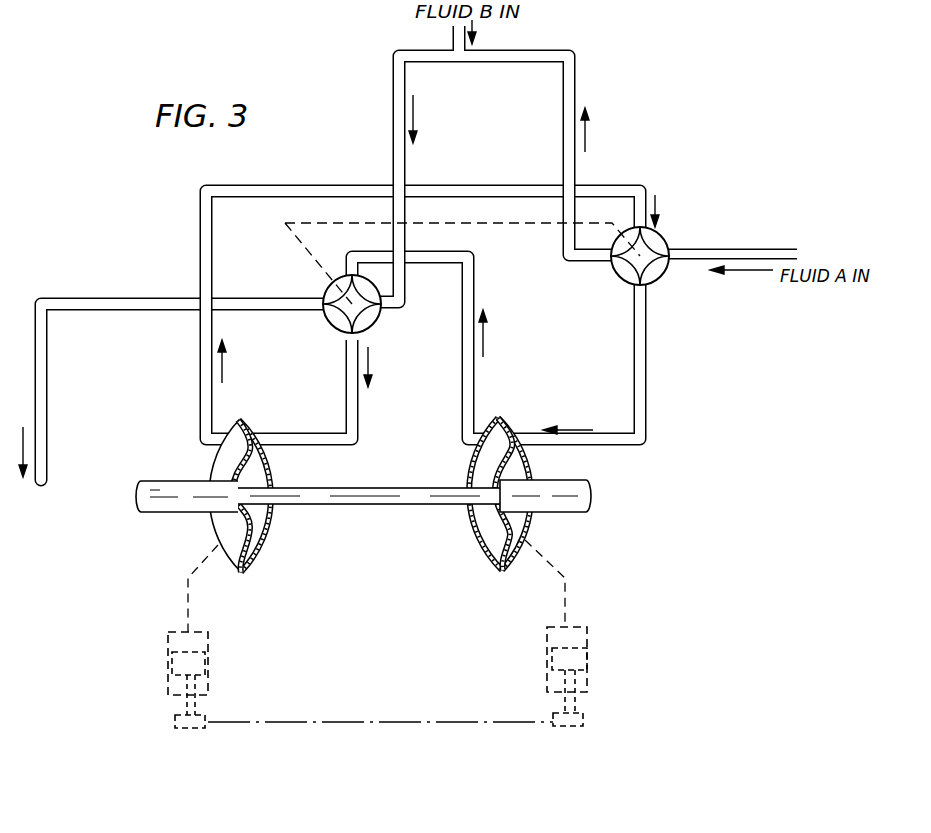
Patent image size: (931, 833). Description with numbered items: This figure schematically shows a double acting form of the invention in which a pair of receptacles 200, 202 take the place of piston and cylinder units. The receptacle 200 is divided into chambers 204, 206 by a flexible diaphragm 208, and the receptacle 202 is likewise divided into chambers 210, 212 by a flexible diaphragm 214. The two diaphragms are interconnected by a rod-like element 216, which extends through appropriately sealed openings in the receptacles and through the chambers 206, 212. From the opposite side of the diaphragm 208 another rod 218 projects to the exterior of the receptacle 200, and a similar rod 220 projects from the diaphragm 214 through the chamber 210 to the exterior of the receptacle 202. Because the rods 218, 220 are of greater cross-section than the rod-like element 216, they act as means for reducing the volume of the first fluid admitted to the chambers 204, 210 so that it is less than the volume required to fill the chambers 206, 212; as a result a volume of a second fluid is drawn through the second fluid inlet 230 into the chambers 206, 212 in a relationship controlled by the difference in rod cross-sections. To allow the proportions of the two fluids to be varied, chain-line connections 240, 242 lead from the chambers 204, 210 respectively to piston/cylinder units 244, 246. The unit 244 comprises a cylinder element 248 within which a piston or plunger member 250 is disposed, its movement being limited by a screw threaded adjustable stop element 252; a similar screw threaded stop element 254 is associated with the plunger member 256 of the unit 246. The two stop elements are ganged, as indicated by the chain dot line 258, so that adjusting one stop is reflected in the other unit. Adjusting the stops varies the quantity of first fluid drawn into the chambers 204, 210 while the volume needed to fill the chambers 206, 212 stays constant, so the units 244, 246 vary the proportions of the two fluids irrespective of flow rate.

The receptacle 200 is at (516, 562).
The receptacle 202 is at (248, 571).
The chamber 204 is at (528, 458).
The chamber 206 is at (481, 466).
The flexible diaphragm 208 is at (494, 524).
The chamber 210 is at (230, 516).
The chamber 212 is at (262, 522).
The flexible diaphragm 214 is at (262, 478).
The rod-like element 216 is at (383, 498).
The rod 218 is at (578, 503).
The rod 220 is at (160, 494).
The second fluid inlet 230 is at (447, 45).
The connection 240 is at (565, 590).
The connection 242 is at (188, 594).
The piston/cylinder unit 244 is at (596, 641).
The piston/cylinder unit 246 is at (214, 657).
The cylinder element 248 is at (587, 659).
The piston or plunger member 250 is at (552, 660).
The screw threaded adjustable stop element 252 is at (583, 712).
The screw threaded stop element 254 is at (205, 707).
The plunger member 256 is at (172, 666).
The ganging connection 258 is at (345, 720).